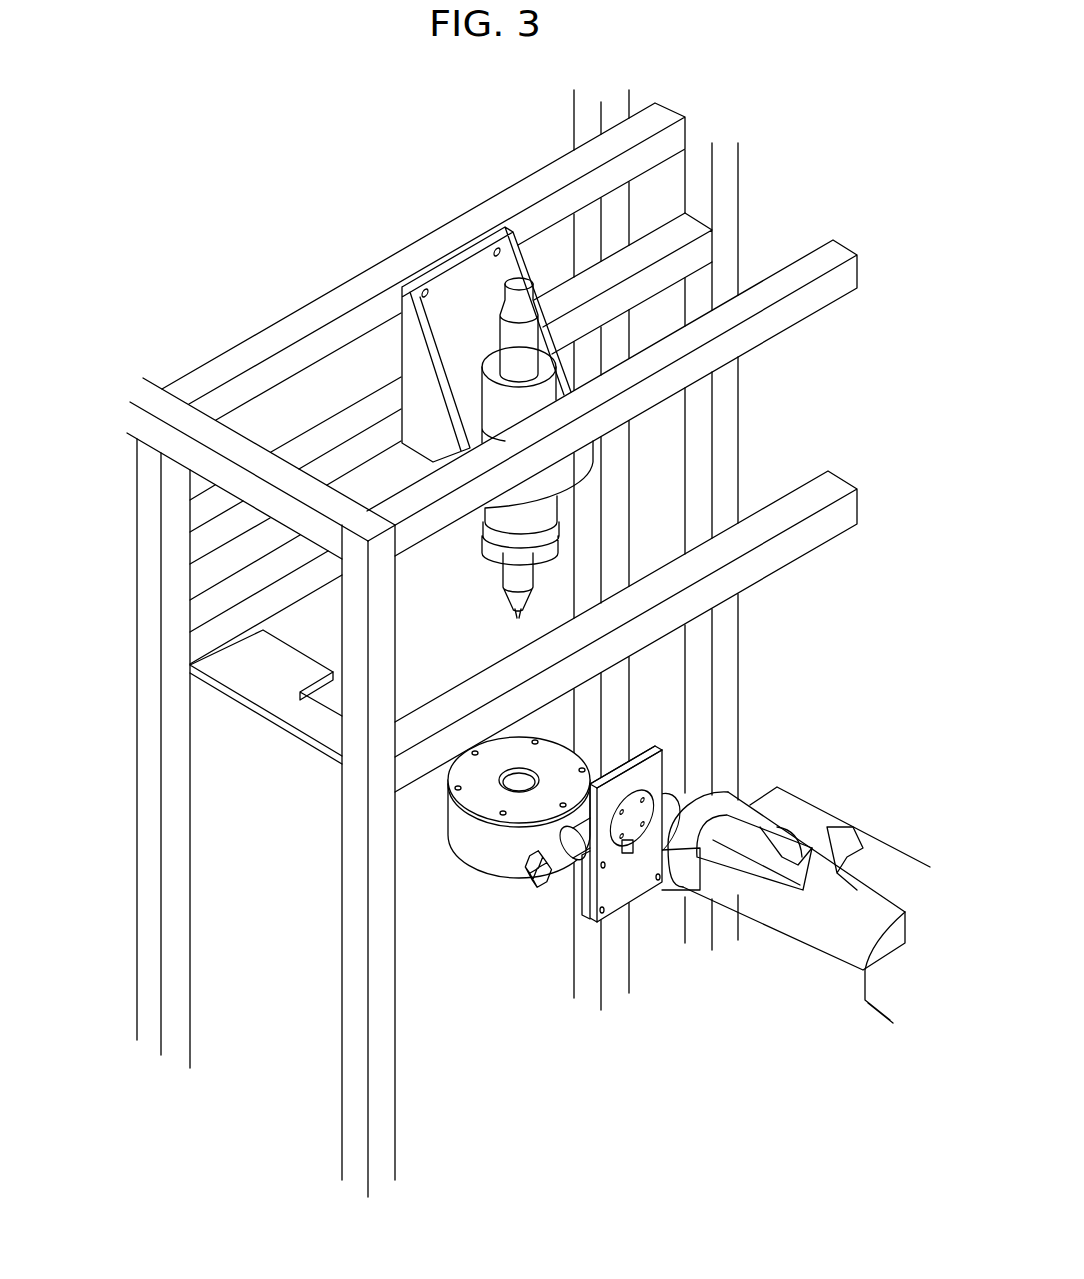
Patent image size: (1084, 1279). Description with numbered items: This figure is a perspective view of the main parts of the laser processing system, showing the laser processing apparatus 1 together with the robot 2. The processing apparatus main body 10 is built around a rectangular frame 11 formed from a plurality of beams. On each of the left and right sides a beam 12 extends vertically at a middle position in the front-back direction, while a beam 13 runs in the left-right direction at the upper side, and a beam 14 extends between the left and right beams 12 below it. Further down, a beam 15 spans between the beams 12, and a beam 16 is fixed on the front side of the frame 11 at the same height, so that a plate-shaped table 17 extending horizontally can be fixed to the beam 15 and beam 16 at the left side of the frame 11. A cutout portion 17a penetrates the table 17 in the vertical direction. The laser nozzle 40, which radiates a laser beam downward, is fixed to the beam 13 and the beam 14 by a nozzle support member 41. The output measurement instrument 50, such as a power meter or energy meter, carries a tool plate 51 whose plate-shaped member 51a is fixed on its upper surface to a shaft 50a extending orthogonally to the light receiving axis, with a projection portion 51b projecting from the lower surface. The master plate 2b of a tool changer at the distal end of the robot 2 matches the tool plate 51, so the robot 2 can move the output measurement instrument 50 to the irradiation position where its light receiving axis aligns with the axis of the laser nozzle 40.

The laser processing apparatus 1 is at (507, 643).
The robot 2 is at (779, 881).
The master plate 2b is at (673, 786).
The processing apparatus main body 10 is at (470, 643).
The frame 11 is at (492, 331).
The beam 12 is at (738, 418).
The beam 13 is at (310, 300).
The beam 14 is at (308, 433).
The beam 15 is at (223, 583).
The beam 16 is at (462, 687).
The table 17 is at (266, 715).
The cutout portion 17a is at (321, 717).
The laser nozzle 40 is at (503, 563).
The nozzle support member 41 is at (454, 282).
The output measurement instrument 50 is at (499, 839).
The shaft 50a is at (573, 858).
The tool plate 51 is at (683, 835).
The plate-shaped member 51a is at (643, 752).
The projection portion 51b is at (677, 783).